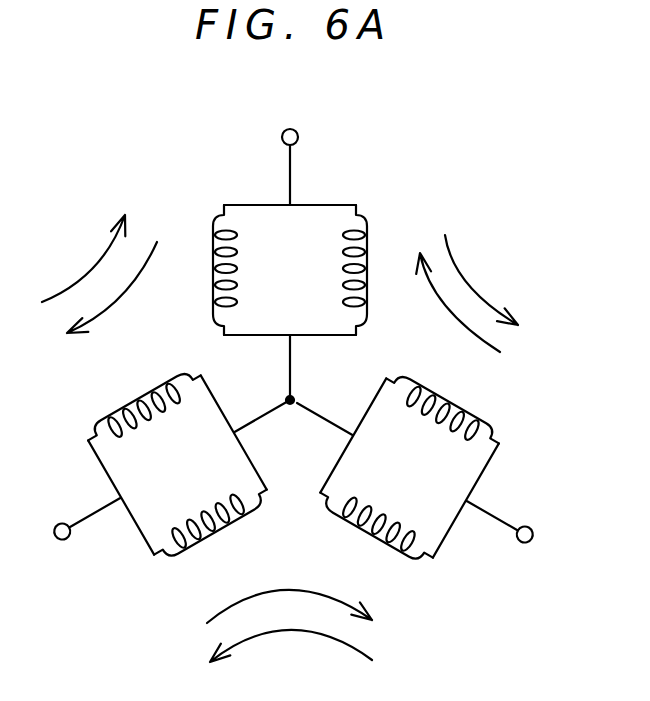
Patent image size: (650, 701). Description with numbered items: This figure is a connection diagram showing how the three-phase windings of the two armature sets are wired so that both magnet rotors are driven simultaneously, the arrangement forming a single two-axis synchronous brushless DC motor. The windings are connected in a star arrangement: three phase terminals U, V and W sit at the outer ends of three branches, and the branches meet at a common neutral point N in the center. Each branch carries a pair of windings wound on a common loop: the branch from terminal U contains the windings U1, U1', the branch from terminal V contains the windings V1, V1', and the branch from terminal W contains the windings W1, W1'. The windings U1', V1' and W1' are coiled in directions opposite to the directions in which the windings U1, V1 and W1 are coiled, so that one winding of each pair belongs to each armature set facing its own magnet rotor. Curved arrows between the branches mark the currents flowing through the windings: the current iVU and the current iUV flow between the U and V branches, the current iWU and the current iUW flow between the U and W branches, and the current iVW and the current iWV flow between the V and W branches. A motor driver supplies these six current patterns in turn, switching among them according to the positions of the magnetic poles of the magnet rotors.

The U-phase terminal U is at (290, 147).
The V-phase terminal V is at (88, 516).
The W-phase terminal W is at (499, 519).
The neutral point N is at (290, 369).
The winding U1 is at (207, 270).
The winding U1' is at (374, 270).
The winding V1 is at (210, 524).
The winding V1' is at (145, 404).
The winding W1 is at (442, 412).
The winding W1' is at (377, 525).
The current i_vu iVU is at (83, 258).
The current i_uv iUV is at (117, 288).
The current i_wu iWU is at (452, 302).
The current i_uw iUW is at (481, 280).
The current i_vw iVW is at (289, 591).
The current i_wv iWV is at (291, 648).